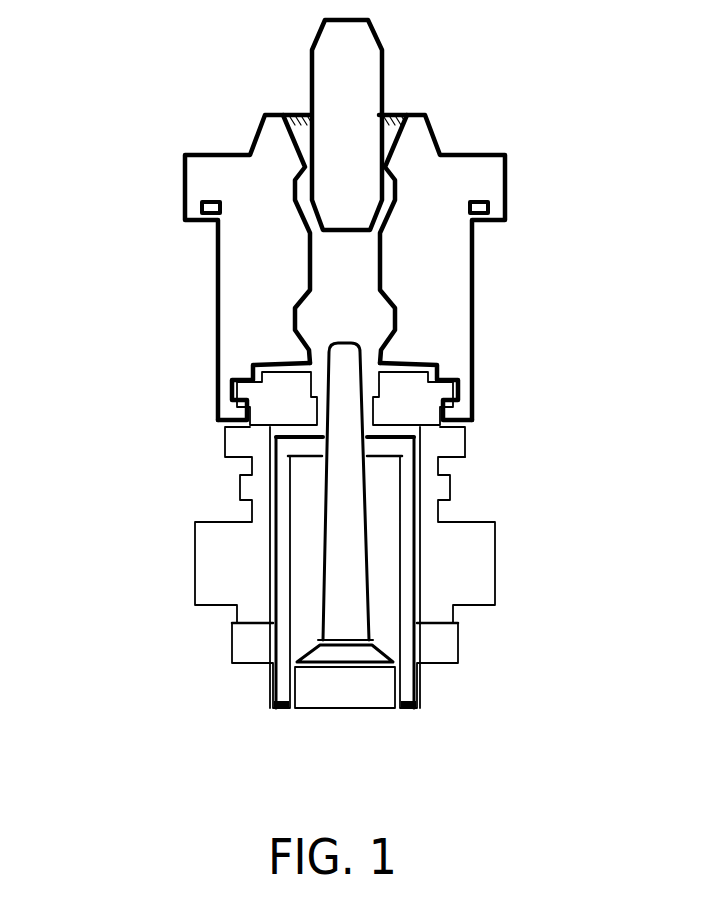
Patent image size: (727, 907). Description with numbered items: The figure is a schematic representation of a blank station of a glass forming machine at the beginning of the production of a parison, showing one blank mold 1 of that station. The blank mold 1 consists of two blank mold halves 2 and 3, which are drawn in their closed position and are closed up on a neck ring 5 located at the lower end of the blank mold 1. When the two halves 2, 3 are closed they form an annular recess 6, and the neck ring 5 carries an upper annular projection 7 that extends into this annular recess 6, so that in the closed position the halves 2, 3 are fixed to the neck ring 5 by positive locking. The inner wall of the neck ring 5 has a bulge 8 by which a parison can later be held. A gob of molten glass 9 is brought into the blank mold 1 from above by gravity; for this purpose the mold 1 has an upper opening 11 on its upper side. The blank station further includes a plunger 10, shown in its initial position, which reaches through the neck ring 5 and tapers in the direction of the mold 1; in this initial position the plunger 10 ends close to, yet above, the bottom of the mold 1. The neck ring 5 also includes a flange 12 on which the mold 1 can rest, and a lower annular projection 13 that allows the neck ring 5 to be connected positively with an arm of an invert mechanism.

The blank mold 1 is at (87, 260).
The blank mold half 2 is at (193, 182).
The blank mold half 3 is at (458, 165).
The neck ring 5 is at (287, 397).
The annular recess 6 is at (233, 373).
The upper annular projection 7 is at (443, 385).
The bulge 8 is at (385, 387).
The gob of molten glass 9 is at (367, 45).
The plunger 10 is at (355, 532).
The upper opening 11 is at (298, 113).
The flange 12 is at (458, 443).
The lower annular projection 13 is at (243, 486).